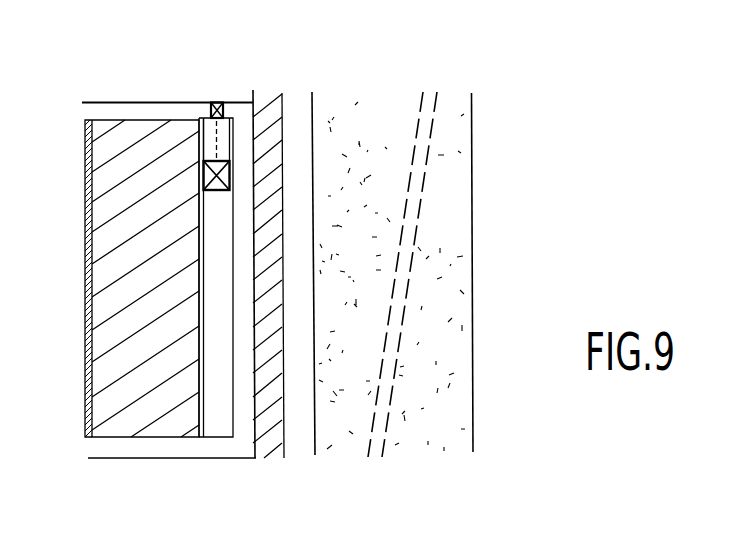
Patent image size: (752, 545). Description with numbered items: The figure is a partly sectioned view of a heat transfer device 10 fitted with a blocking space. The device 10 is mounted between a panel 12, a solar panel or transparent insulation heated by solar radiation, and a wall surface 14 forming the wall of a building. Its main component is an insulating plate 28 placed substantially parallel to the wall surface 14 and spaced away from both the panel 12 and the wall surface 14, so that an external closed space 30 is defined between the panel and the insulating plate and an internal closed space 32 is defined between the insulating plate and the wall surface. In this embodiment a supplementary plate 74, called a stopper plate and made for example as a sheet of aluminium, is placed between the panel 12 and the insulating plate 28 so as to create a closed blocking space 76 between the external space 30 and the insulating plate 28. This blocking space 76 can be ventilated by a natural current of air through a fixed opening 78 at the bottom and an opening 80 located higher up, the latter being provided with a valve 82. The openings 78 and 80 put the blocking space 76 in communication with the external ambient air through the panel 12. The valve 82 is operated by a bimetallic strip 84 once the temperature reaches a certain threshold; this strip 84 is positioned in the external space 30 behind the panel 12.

The heat transfer device 10 is at (215, 469).
The panel 12 is at (82, 469).
The wall surface 14 is at (438, 303).
The insulating plate 28 is at (267, 91).
The external closed space 30 is at (222, 242).
The internal closed space 32 is at (297, 126).
The supplementary plate 74 is at (231, 298).
The blocking space 76 is at (247, 332).
The fixed opening 78 is at (240, 443).
The opening 80 is at (234, 110).
The valve 82 is at (211, 110).
The bimetallic strip 84 is at (203, 178).